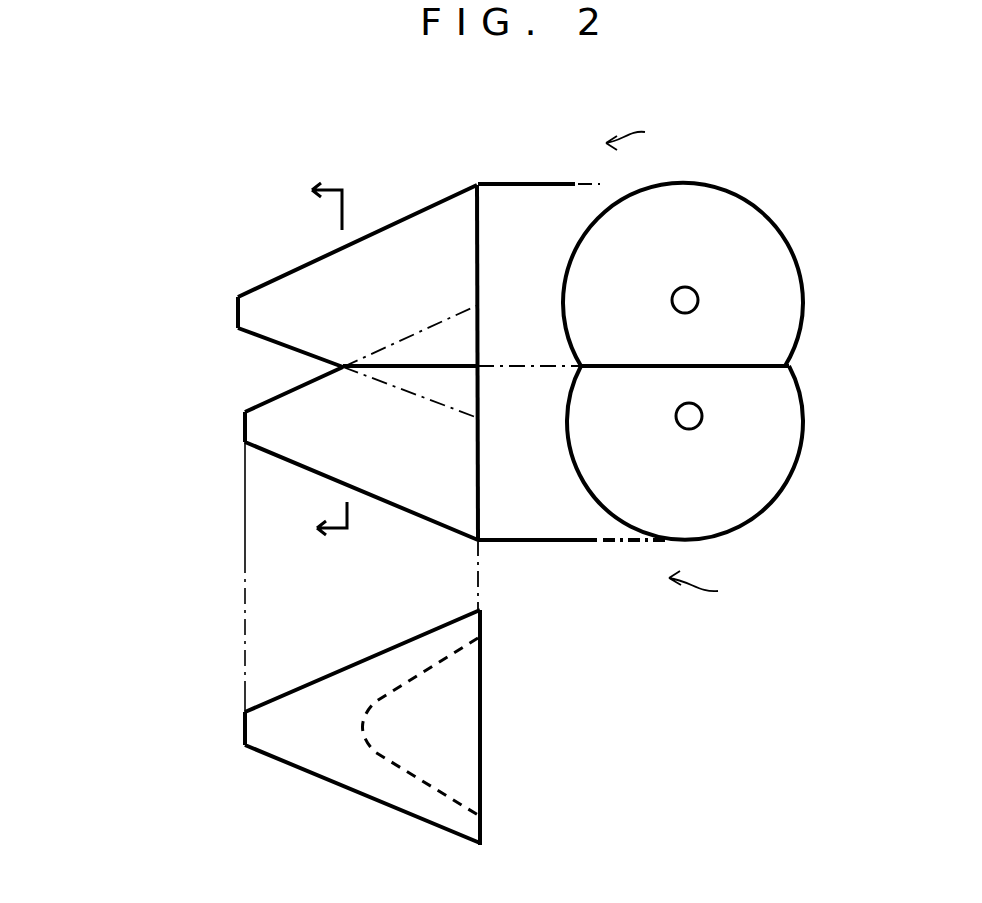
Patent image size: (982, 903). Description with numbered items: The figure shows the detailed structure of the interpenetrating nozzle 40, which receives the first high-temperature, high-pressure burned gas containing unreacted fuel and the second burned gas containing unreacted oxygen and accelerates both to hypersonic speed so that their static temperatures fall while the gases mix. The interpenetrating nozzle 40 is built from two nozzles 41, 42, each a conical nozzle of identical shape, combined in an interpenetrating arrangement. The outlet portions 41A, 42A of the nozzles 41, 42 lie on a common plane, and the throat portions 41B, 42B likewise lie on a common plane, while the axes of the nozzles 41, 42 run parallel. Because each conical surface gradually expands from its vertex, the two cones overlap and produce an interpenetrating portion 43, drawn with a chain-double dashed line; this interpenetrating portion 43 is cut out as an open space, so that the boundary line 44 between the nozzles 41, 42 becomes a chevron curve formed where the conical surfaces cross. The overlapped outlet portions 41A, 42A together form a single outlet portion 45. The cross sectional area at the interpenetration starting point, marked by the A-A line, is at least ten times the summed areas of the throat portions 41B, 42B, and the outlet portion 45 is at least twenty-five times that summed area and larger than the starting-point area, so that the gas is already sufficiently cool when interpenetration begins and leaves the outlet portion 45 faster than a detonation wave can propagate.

The interpenetrating nozzle 40 is at (116, 173).
The nozzle 41 is at (279, 277).
The outlet portion 41A is at (480, 225).
The throat portion 41B is at (238, 312).
The nozzle 42 is at (293, 463).
The outlet portion 42A is at (480, 495).
The throat portion 42B is at (243, 430).
The interpenetrating portion 43 is at (417, 333).
The boundary line 44 is at (443, 367).
The outlet portion 45 is at (687, 364).